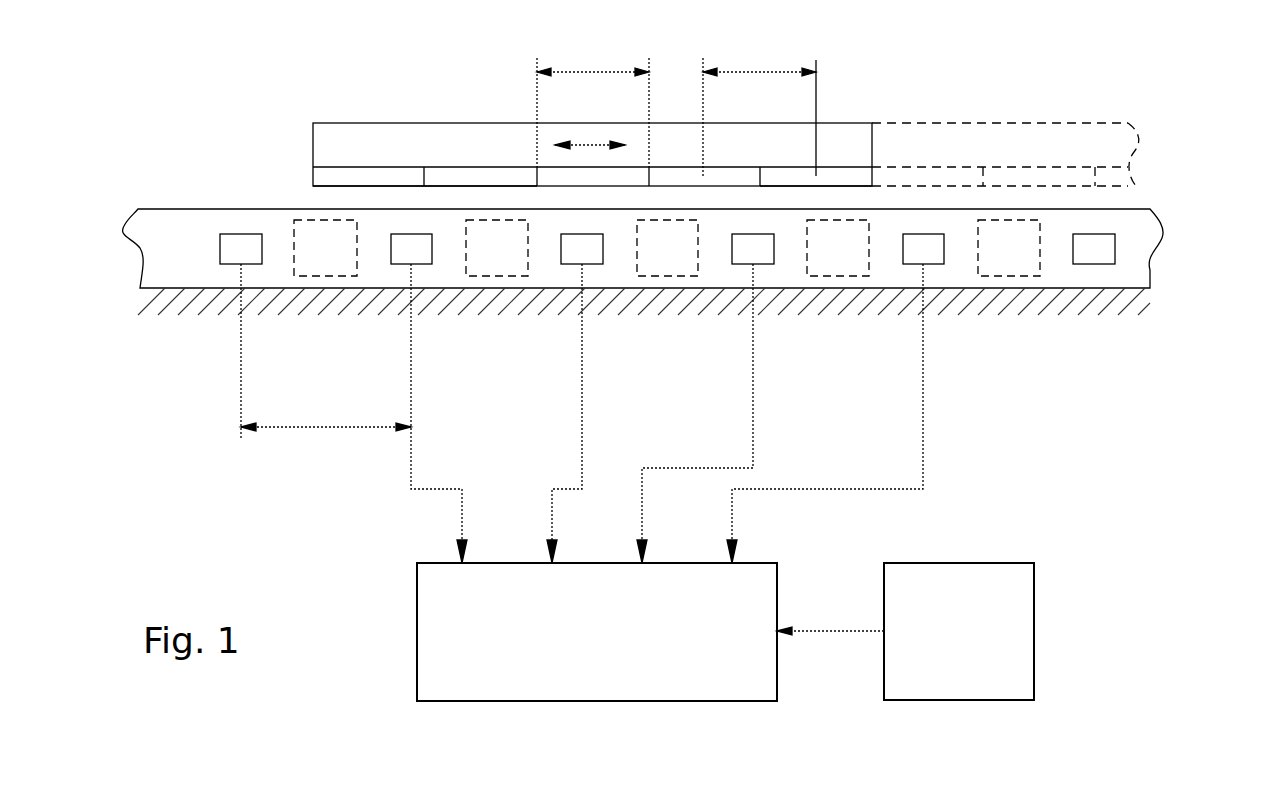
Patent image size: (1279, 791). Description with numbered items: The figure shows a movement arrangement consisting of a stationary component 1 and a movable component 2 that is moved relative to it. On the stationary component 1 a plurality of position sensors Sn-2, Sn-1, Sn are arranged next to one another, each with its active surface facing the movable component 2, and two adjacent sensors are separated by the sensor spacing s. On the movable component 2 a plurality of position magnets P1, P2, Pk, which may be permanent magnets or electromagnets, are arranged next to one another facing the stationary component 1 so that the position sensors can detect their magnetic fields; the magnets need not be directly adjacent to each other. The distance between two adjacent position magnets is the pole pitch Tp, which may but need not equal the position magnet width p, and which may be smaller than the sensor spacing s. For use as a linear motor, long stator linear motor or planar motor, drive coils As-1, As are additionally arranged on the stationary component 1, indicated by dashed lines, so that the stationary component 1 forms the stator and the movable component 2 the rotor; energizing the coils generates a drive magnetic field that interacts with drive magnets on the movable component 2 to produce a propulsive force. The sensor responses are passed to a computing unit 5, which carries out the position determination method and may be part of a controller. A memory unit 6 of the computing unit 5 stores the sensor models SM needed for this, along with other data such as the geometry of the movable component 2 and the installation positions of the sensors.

The stationary component 1 is at (1130, 227).
The movable component 2 is at (670, 150).
The computing unit 5 is at (612, 643).
The memory unit 6 is at (970, 643).
The position magnet P1 is at (395, 177).
The position magnet P2 is at (480, 176).
The position magnet Pk is at (838, 175).
The position magnet width p is at (593, 102).
The pole pitch Tp is at (759, 103).
The position sensor Sn-2 is at (229, 252).
The position sensor Sn-1 is at (403, 252).
The position sensor Sn is at (579, 250).
The drive coil As-1 is at (490, 250).
The drive coil As is at (667, 250).
The sensor spacing s is at (326, 413).
The sensor model SM is at (830, 612).